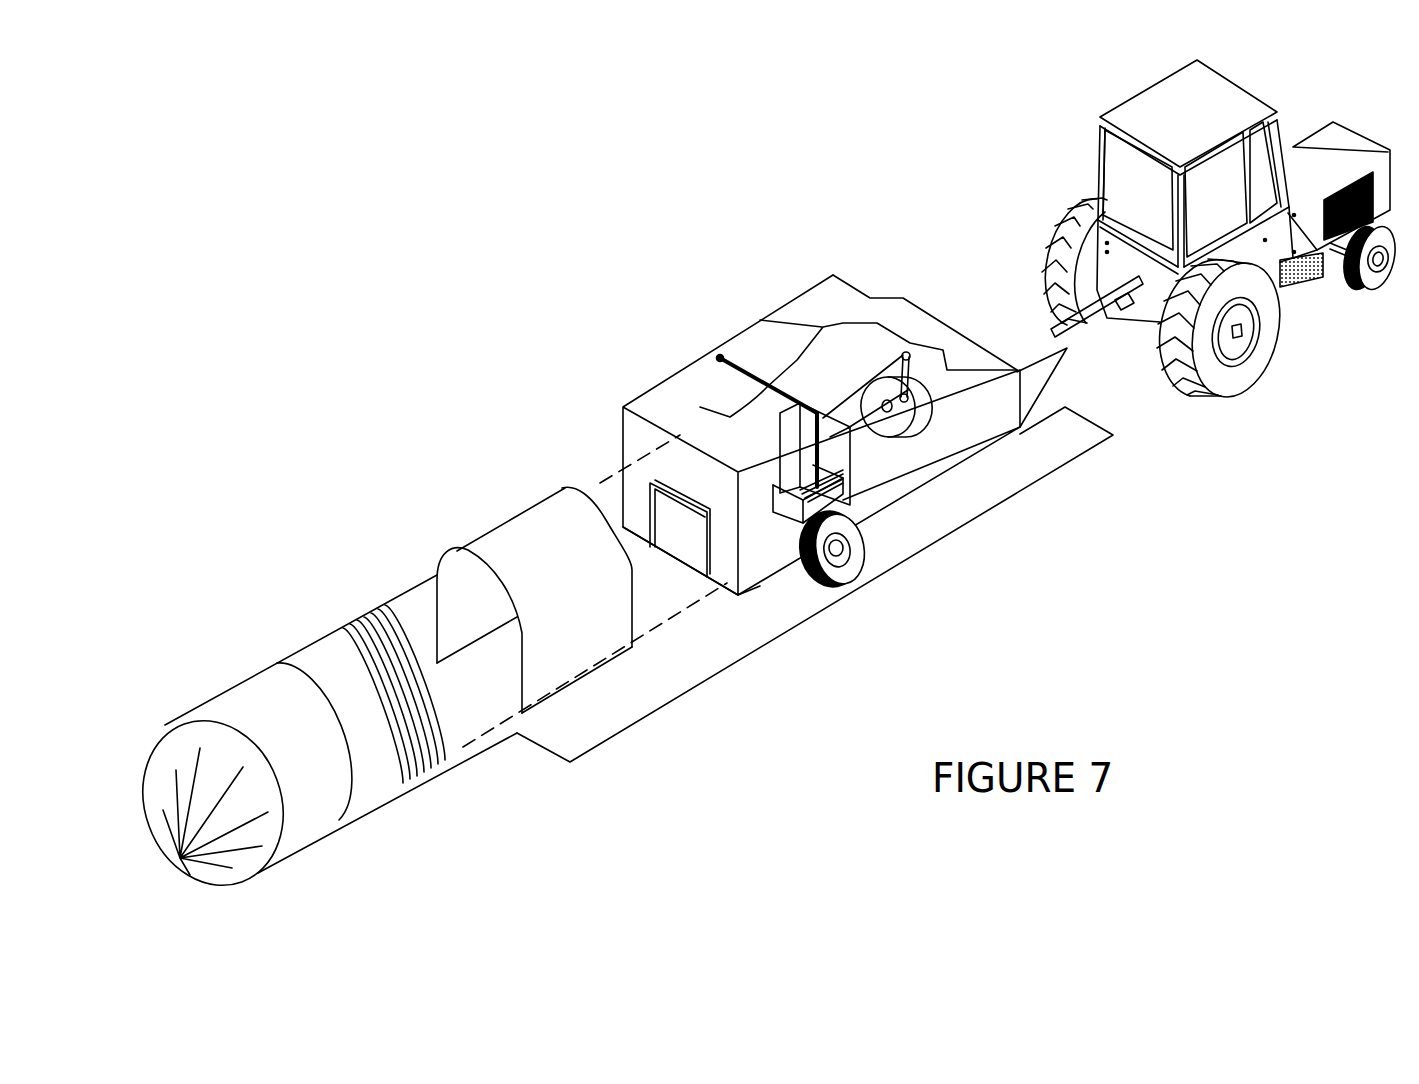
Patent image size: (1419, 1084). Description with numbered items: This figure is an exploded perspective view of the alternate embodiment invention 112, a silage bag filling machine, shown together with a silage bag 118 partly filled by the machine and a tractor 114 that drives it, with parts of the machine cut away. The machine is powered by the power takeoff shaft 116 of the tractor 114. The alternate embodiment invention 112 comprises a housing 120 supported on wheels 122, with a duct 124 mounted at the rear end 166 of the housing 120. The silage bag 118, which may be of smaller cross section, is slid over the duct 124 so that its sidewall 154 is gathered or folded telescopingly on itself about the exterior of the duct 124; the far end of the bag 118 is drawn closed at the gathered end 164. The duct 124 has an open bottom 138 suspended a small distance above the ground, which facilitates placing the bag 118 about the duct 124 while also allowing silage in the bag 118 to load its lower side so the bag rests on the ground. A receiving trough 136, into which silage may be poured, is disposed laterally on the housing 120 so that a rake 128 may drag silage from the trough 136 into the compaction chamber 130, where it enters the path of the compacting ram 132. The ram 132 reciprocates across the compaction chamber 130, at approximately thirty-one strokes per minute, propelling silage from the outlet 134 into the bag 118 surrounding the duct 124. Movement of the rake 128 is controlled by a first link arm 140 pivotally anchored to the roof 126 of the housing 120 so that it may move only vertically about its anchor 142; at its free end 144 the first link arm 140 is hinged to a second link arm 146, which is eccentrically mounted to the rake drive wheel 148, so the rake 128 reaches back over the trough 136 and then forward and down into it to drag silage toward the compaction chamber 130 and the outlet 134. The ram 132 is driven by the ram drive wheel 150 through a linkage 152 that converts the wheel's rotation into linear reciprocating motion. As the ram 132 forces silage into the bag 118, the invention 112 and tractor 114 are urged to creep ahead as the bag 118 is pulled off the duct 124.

The alternate embodiment invention 112 is at (842, 600).
The tractor 114 is at (1290, 313).
The power takeoff shaft 116 is at (1097, 312).
The silage bag 118 is at (367, 776).
The housing 120 is at (650, 405).
The wheels 122 is at (858, 588).
The duct 124 is at (513, 537).
The roof 126 is at (825, 297).
The rake 128 is at (800, 522).
The compaction chamber 130 is at (775, 445).
The compacting ram 132 is at (843, 457).
The outlet 134 is at (685, 538).
The receiving trough 136 is at (823, 577).
The open bottom 138 is at (497, 677).
The first link arm 140 is at (767, 395).
The anchor 142 is at (722, 357).
The free end 144 is at (818, 410).
The second link arm 146 is at (852, 430).
The rake drive wheel 148 is at (841, 500).
The ram drive wheel 150 is at (890, 425).
The linkage 152 is at (878, 378).
The sidewall 154 is at (347, 615).
The bag end tie 164 is at (203, 857).
The rear end 166 is at (732, 573).